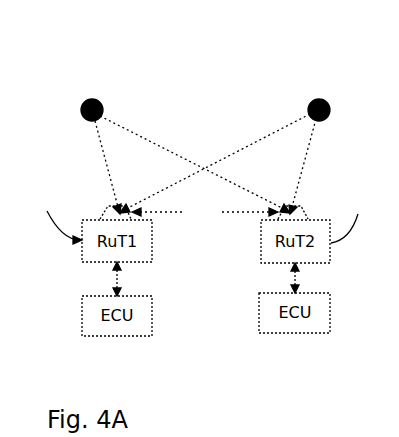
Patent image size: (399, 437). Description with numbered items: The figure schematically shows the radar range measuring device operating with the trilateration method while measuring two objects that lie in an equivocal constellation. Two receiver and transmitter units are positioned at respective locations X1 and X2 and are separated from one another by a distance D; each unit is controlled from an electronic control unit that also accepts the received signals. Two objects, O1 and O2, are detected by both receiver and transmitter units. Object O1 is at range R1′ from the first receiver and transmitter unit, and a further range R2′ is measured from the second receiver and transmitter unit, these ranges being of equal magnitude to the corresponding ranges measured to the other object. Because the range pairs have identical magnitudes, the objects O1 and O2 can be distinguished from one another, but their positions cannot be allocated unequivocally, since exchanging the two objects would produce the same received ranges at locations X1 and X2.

The object O1 is at (96, 100).
The object O2 is at (319, 99).
The range R1′ is at (96, 167).
The range R2′ is at (195, 164).
The location X1 is at (53, 220).
The location X2 is at (360, 219).
The distance D is at (205, 214).